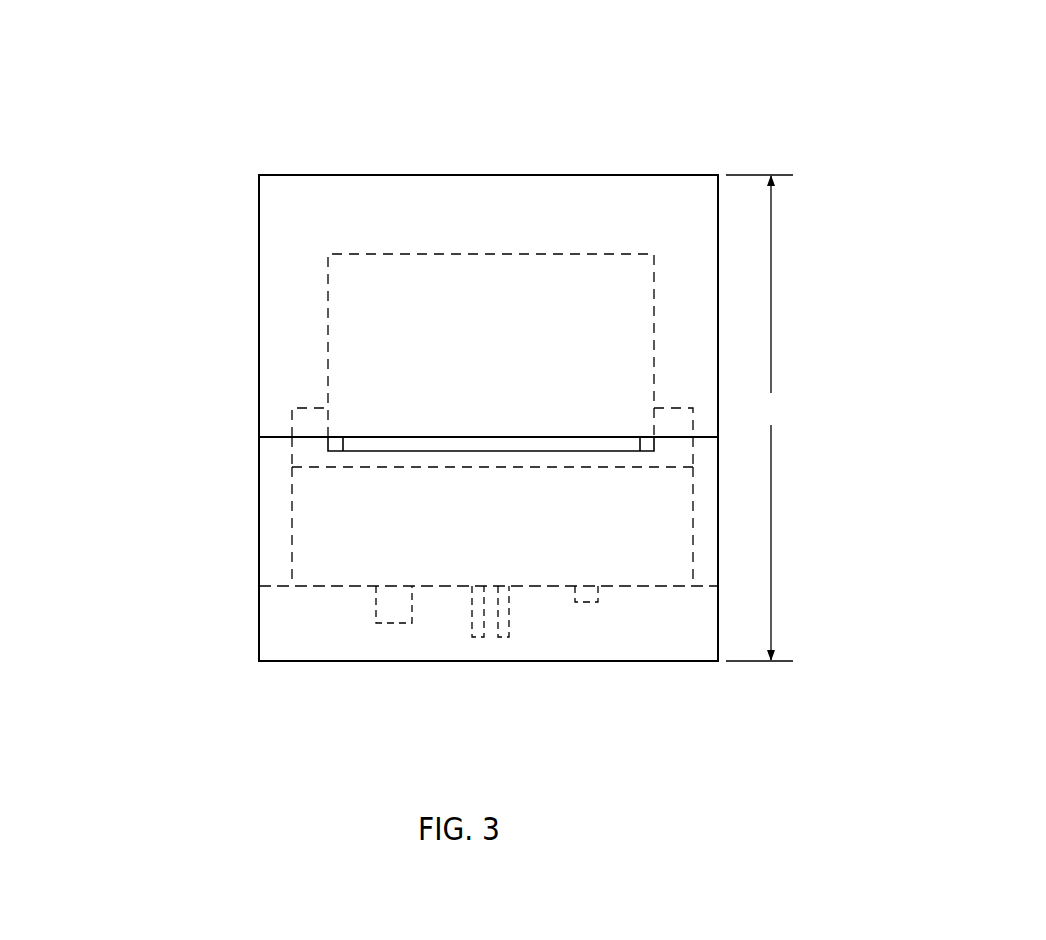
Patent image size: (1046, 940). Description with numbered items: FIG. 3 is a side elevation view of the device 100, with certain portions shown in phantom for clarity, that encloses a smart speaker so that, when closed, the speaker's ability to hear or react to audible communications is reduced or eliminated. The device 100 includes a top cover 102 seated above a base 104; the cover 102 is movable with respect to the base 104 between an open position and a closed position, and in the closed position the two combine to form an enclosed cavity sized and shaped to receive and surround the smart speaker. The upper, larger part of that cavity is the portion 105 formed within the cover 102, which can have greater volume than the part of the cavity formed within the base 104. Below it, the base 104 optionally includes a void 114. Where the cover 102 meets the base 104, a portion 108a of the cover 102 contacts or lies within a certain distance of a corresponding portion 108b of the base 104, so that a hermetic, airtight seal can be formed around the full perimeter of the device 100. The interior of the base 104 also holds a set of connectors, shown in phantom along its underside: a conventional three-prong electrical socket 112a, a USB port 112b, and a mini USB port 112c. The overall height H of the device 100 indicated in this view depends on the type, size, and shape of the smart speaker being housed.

The device 100 is at (788, 118).
The top cover 102 is at (258, 283).
The base 104 is at (257, 548).
The portion of the cavity 105 is at (548, 338).
The portion of the cover 108a is at (305, 423).
The portion of the base 108b is at (305, 457).
The three-prong electrical socket 112a is at (492, 650).
The USB port 112b is at (397, 627).
The mini USB port 112c is at (590, 605).
The void 114 is at (592, 549).